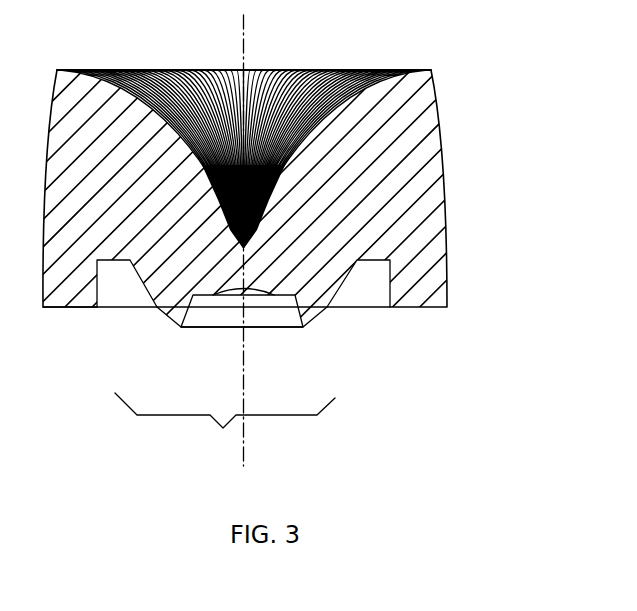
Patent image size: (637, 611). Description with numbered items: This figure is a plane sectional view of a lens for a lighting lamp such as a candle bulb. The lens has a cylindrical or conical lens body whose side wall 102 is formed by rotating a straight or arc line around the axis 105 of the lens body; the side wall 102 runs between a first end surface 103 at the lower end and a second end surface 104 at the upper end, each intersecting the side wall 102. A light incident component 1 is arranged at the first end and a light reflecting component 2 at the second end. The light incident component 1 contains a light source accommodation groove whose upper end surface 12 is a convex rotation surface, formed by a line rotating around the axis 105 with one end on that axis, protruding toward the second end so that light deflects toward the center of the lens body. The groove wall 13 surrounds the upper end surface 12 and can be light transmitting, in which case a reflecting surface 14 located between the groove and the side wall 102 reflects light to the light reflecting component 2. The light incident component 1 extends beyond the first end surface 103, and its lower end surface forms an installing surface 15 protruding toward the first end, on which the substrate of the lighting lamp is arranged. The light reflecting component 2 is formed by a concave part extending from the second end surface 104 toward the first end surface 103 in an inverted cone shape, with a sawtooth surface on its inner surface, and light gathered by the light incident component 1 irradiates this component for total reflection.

The light incident component 1 is at (243, 363).
The light reflecting component 2 is at (298, 69).
The upper end surface 12 is at (263, 297).
The groove wall 13 is at (192, 310).
The reflecting surface 14 is at (155, 305).
The installing surface 15 is at (303, 327).
The side wall 102 is at (441, 148).
The first end surface 103 is at (70, 307).
The second end surface 104 is at (57, 70).
The axis 105 is at (243, 53).